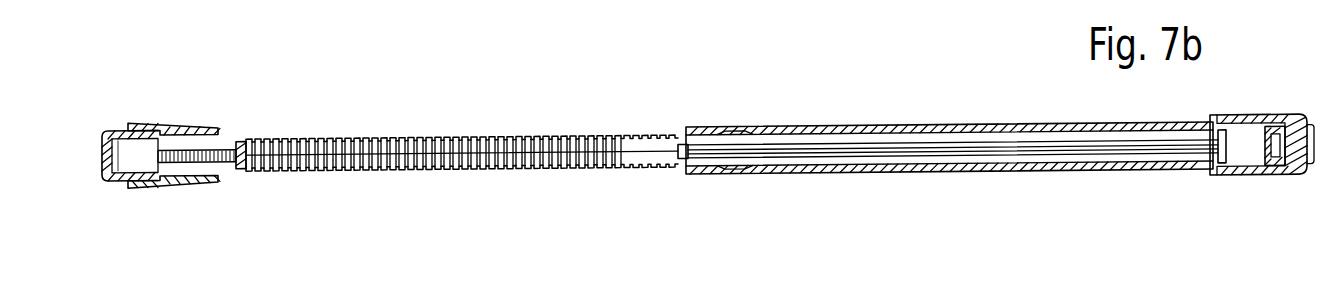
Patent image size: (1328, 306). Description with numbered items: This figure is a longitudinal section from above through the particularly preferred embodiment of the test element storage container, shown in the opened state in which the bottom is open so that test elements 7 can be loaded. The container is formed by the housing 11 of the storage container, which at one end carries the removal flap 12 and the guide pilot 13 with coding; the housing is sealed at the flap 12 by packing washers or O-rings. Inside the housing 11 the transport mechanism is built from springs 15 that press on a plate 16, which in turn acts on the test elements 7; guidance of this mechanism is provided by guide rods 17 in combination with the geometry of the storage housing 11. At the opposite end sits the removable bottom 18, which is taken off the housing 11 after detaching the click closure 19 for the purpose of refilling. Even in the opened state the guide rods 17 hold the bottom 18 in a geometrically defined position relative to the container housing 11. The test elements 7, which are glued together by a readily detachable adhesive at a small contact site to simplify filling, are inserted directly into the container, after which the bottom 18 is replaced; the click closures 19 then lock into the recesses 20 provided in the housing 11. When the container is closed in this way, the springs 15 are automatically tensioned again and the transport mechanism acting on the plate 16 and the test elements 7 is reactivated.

The test element with edge profile 7 is at (512, 170).
The housing of the storage container 11 is at (833, 126).
The flap 12 is at (1228, 173).
The guide pilot with coding 13 is at (1281, 170).
The spring 15 is at (226, 148).
The plate 16 is at (243, 175).
The guide rod 17 is at (681, 163).
The removable bottom 18 is at (121, 180).
The click closure 19 is at (189, 187).
The recess for the click closure 20 is at (737, 175).